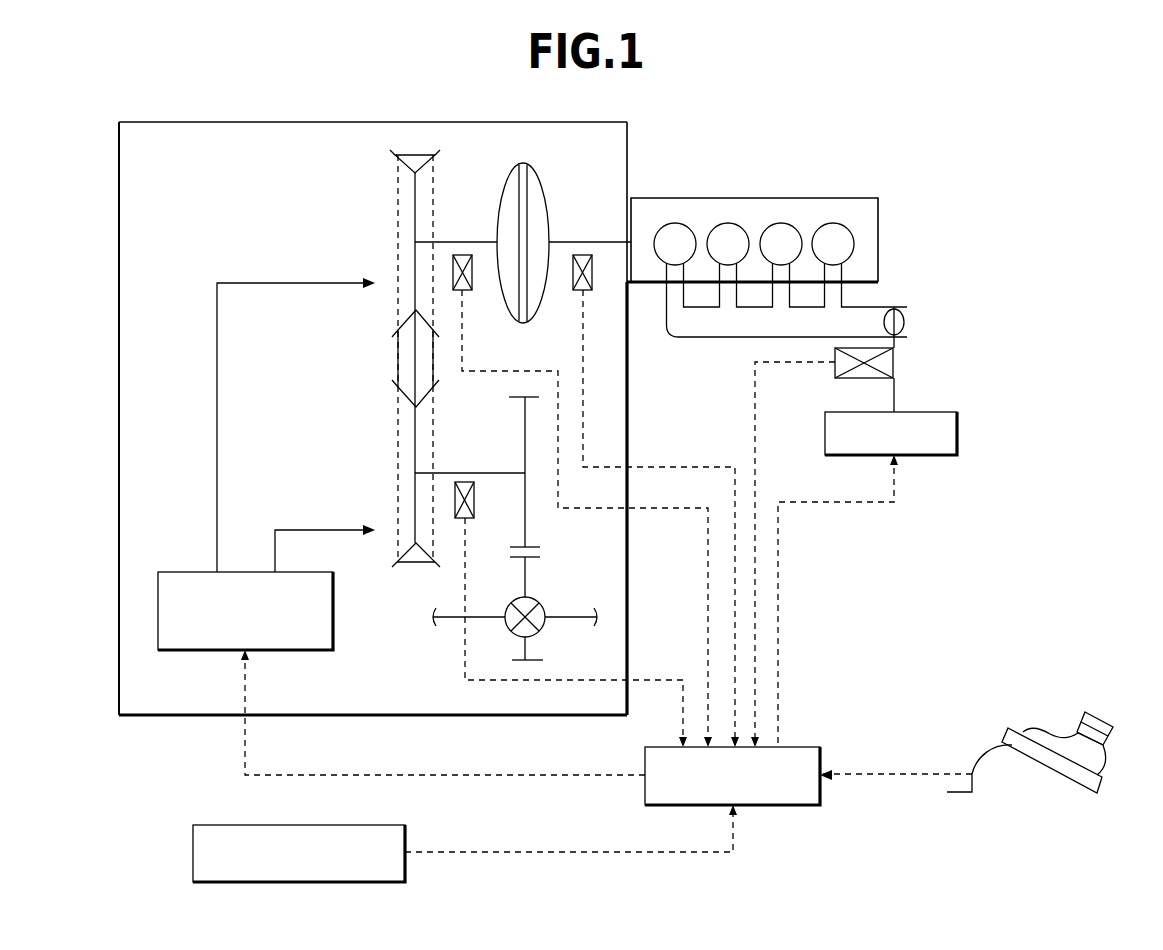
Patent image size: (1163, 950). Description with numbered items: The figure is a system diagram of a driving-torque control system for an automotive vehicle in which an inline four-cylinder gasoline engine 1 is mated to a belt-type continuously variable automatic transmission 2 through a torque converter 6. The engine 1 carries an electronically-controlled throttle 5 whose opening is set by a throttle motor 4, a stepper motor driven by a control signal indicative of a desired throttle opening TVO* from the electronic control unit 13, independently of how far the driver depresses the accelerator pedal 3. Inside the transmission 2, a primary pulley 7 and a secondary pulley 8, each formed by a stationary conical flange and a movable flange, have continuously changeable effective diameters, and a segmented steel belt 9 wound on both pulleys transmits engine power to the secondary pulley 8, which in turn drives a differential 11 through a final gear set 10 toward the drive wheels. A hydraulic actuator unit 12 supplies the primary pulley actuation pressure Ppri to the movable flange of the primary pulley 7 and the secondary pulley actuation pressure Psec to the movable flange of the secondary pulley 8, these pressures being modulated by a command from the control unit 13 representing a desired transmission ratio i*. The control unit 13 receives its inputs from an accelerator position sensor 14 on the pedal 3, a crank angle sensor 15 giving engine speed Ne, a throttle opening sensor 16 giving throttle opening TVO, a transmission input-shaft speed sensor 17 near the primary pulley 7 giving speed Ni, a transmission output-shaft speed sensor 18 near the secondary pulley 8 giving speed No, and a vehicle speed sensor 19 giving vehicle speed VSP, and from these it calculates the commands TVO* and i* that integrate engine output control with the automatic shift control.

The engine 1 is at (840, 198).
The continuously variable automatic transmission 2 is at (118, 267).
The accelerator pedal 3 is at (1010, 733).
The throttle motor 4 is at (957, 436).
The electronically-controlled throttle 5 is at (905, 322).
The torque converter 6 is at (542, 176).
The primary pulley 7 is at (393, 154).
The secondary pulley 8 is at (397, 386).
The segmented steel belt 9 is at (397, 358).
The final gear set 10 is at (526, 527).
The differential 11 is at (543, 627).
The hydraulic actuator unit 12 is at (197, 572).
The electronic control unit 13 is at (824, 747).
The accelerator position sensor 14 is at (983, 760).
The crank angle sensor 15 is at (583, 255).
The throttle opening sensor 16 is at (893, 365).
The transmission input-shaft speed sensor 17 is at (462, 255).
The transmission output-shaft speed sensor 18 is at (463, 482).
The vehicle speed sensor 19 is at (193, 858).